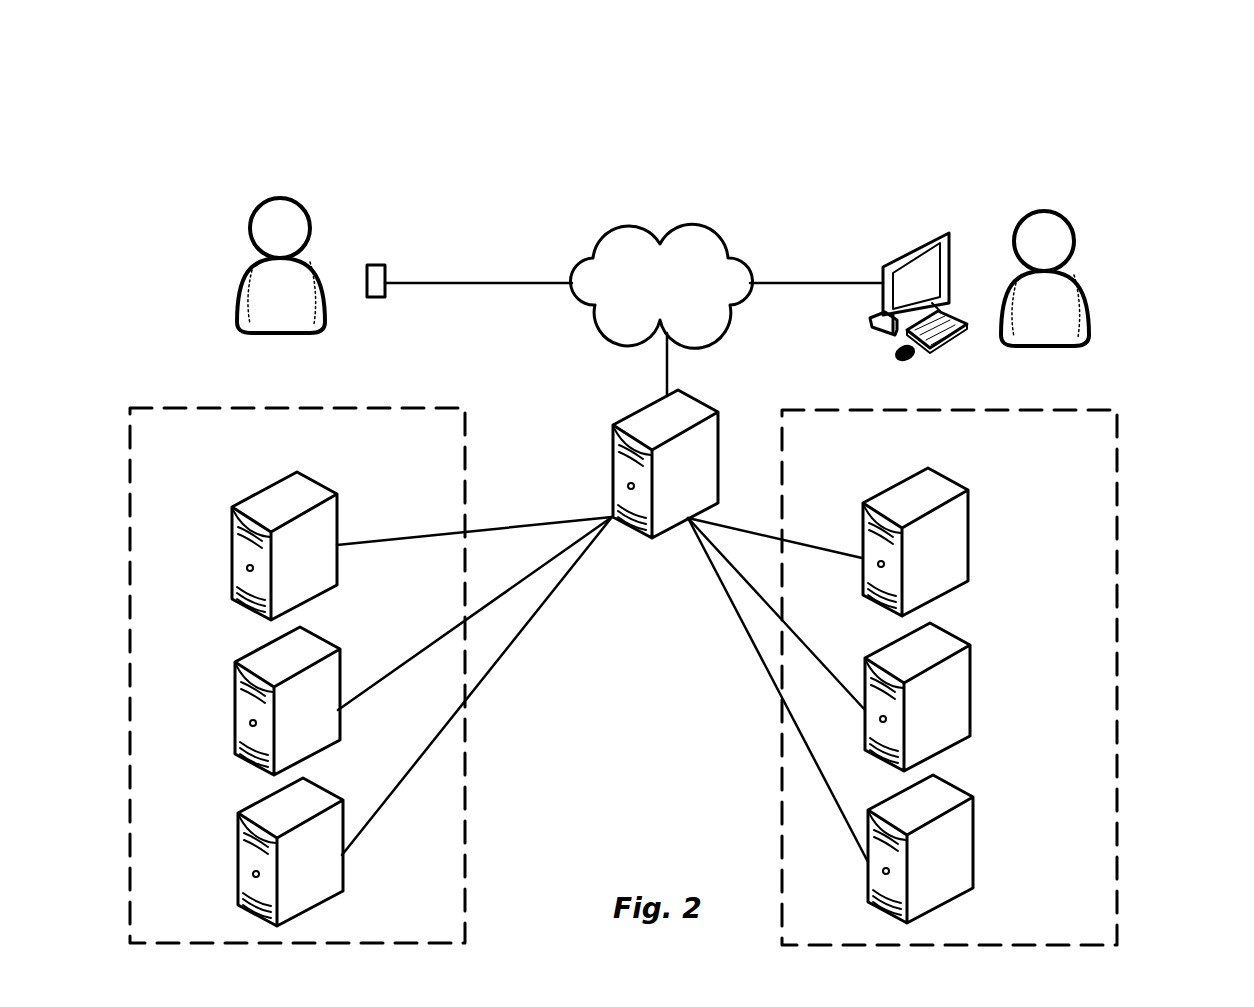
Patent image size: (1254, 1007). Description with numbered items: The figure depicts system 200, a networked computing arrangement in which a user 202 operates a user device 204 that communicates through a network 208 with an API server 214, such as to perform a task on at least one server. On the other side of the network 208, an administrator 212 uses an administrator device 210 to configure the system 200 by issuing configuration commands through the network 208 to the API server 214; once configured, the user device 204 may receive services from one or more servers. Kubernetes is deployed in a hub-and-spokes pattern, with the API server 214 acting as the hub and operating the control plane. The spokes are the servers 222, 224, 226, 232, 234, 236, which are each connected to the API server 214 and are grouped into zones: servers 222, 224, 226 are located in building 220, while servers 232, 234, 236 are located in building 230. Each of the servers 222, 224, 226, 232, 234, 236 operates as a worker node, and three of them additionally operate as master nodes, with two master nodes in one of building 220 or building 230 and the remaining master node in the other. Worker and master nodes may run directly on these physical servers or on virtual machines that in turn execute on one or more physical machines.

The system 200 is at (1112, 83).
The user 202 is at (248, 254).
The user device 204 is at (383, 267).
The network 208 is at (687, 232).
The administrator device 210 is at (904, 247).
The administrator 212 is at (1087, 273).
The API server 214 is at (715, 412).
The building 220 is at (465, 450).
The server 222 is at (317, 480).
The server 224 is at (320, 637).
The server 226 is at (320, 783).
The building 230 is at (1117, 453).
The server 232 is at (970, 527).
The server 234 is at (975, 680).
The server 236 is at (977, 830).